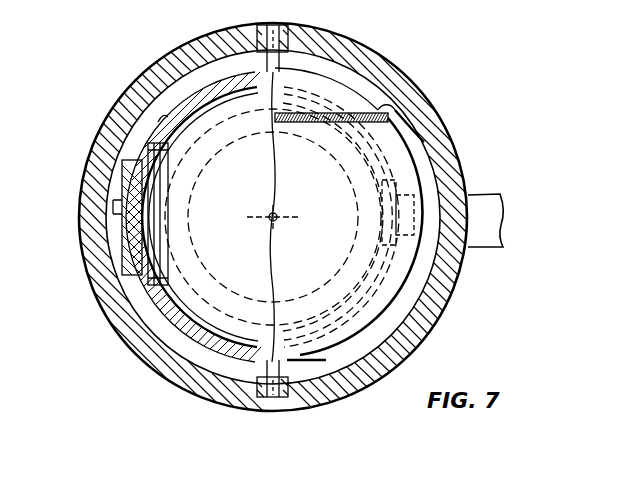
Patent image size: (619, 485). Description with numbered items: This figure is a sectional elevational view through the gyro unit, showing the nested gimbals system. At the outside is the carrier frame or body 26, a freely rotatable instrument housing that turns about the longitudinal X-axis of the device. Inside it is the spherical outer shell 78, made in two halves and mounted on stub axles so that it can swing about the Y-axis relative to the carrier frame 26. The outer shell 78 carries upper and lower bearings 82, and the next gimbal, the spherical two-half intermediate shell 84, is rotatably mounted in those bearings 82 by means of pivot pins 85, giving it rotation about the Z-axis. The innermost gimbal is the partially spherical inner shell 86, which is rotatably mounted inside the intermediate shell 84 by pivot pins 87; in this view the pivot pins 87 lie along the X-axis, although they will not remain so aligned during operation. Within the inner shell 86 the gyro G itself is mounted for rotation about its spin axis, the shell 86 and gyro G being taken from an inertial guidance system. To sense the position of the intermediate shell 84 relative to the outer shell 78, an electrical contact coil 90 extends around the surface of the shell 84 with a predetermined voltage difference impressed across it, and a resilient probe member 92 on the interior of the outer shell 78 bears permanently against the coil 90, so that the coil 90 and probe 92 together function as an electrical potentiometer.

The carrier frame body 26 is at (480, 192).
The spherical outer shell 78 is at (412, 338).
The upper and lower bearings 82 is at (284, 40).
The intermediate shell 84 is at (135, 300).
The pivot pins 85 is at (263, 38).
The inner shell 86 is at (185, 300).
The pivot pins 87 is at (128, 212).
The electrical contact coil 90 is at (162, 117).
The probe member 92 is at (403, 120).
The gyro G is at (215, 128).